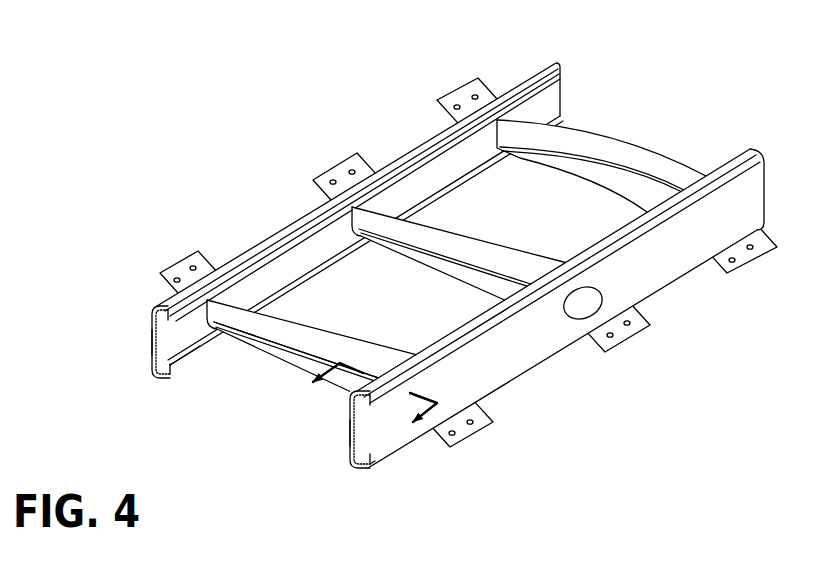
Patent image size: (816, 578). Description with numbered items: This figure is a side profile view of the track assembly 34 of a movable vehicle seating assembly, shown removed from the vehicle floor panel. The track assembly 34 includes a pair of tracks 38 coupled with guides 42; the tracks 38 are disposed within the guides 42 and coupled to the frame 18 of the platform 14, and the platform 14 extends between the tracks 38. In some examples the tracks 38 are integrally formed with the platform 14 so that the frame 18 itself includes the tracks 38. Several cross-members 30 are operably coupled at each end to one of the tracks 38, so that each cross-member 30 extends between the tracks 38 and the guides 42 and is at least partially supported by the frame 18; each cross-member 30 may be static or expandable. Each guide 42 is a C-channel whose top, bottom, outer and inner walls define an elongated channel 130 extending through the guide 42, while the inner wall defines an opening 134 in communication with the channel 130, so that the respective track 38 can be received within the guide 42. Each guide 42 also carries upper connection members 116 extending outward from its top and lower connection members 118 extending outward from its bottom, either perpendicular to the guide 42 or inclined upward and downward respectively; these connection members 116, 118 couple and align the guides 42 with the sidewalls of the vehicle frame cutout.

The platform 14 is at (415, 285).
The frame 18 is at (281, 346).
The cross-member 30 is at (540, 122).
The track assembly 34 is at (390, 138).
The track 38 is at (160, 323).
The guide 42 is at (247, 242).
The upper connection member 116 is at (178, 265).
The lower connection member 118 is at (473, 432).
The channel 130 is at (149, 357).
The opening 134 is at (189, 348).